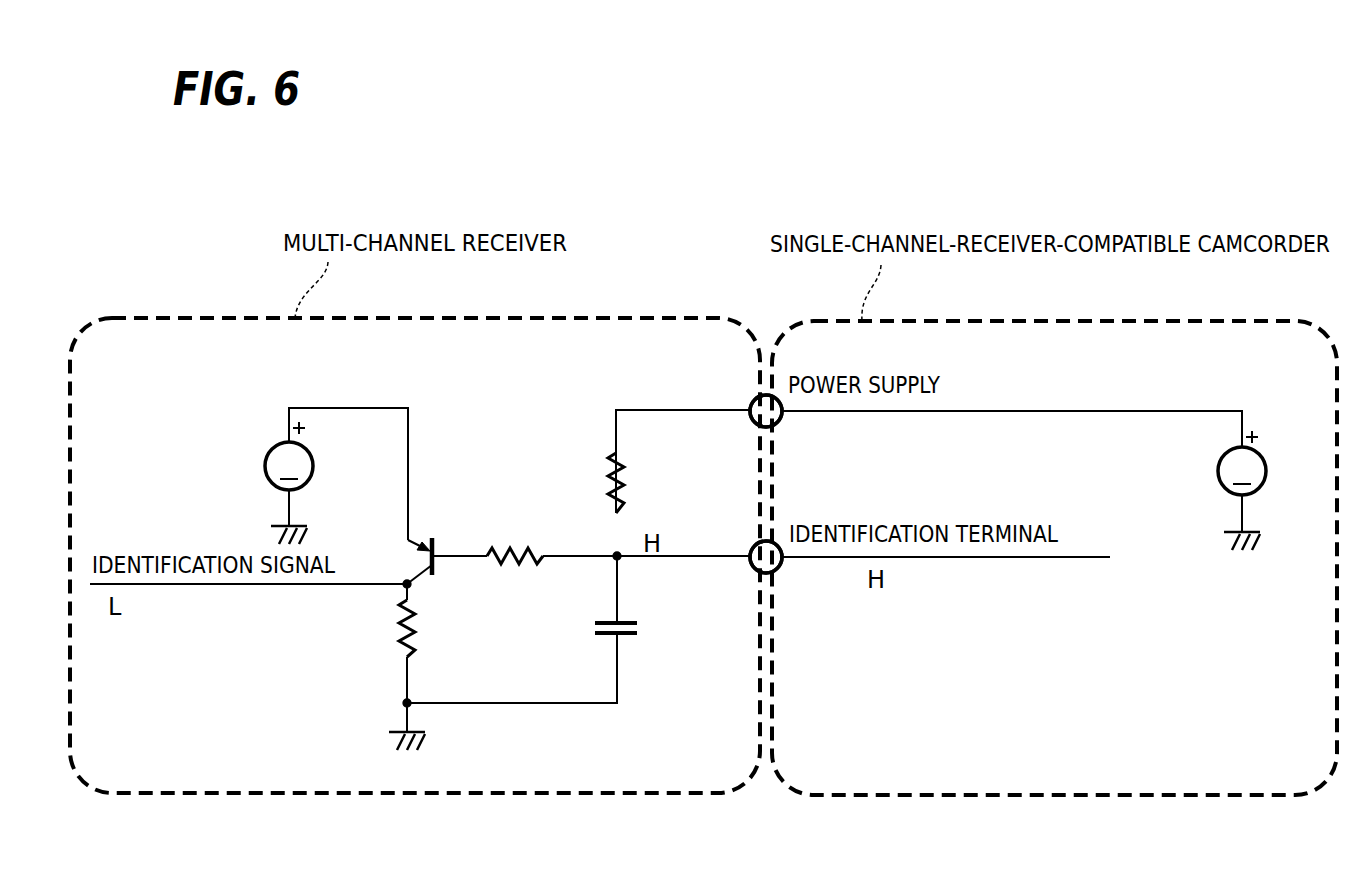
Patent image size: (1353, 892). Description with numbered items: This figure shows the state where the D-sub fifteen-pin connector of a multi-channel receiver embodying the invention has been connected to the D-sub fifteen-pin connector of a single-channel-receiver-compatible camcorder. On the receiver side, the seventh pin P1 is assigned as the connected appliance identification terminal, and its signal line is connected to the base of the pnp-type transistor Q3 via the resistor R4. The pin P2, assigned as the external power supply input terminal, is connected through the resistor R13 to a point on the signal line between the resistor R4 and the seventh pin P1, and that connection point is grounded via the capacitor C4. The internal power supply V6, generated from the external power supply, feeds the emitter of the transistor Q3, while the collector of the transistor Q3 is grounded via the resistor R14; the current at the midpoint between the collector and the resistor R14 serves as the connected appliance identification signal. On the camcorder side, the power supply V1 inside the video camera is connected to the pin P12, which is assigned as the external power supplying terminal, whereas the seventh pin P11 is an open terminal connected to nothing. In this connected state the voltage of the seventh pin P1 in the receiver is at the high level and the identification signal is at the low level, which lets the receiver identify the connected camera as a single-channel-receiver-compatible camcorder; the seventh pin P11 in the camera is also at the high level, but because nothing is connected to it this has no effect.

The internal power supply V6 is at (309, 456).
The pnp-type transistor Q3 is at (402, 561).
The resistor R4 is at (515, 539).
The resistor R14 is at (437, 628).
The resistor R13 is at (645, 483).
The capacitor C4 is at (636, 630).
The pin P2 is at (753, 402).
The seventh pin P1 is at (753, 549).
The pin P12 is at (779, 423).
The seventh pin P11 is at (779, 569).
The power supply V1 is at (1262, 463).